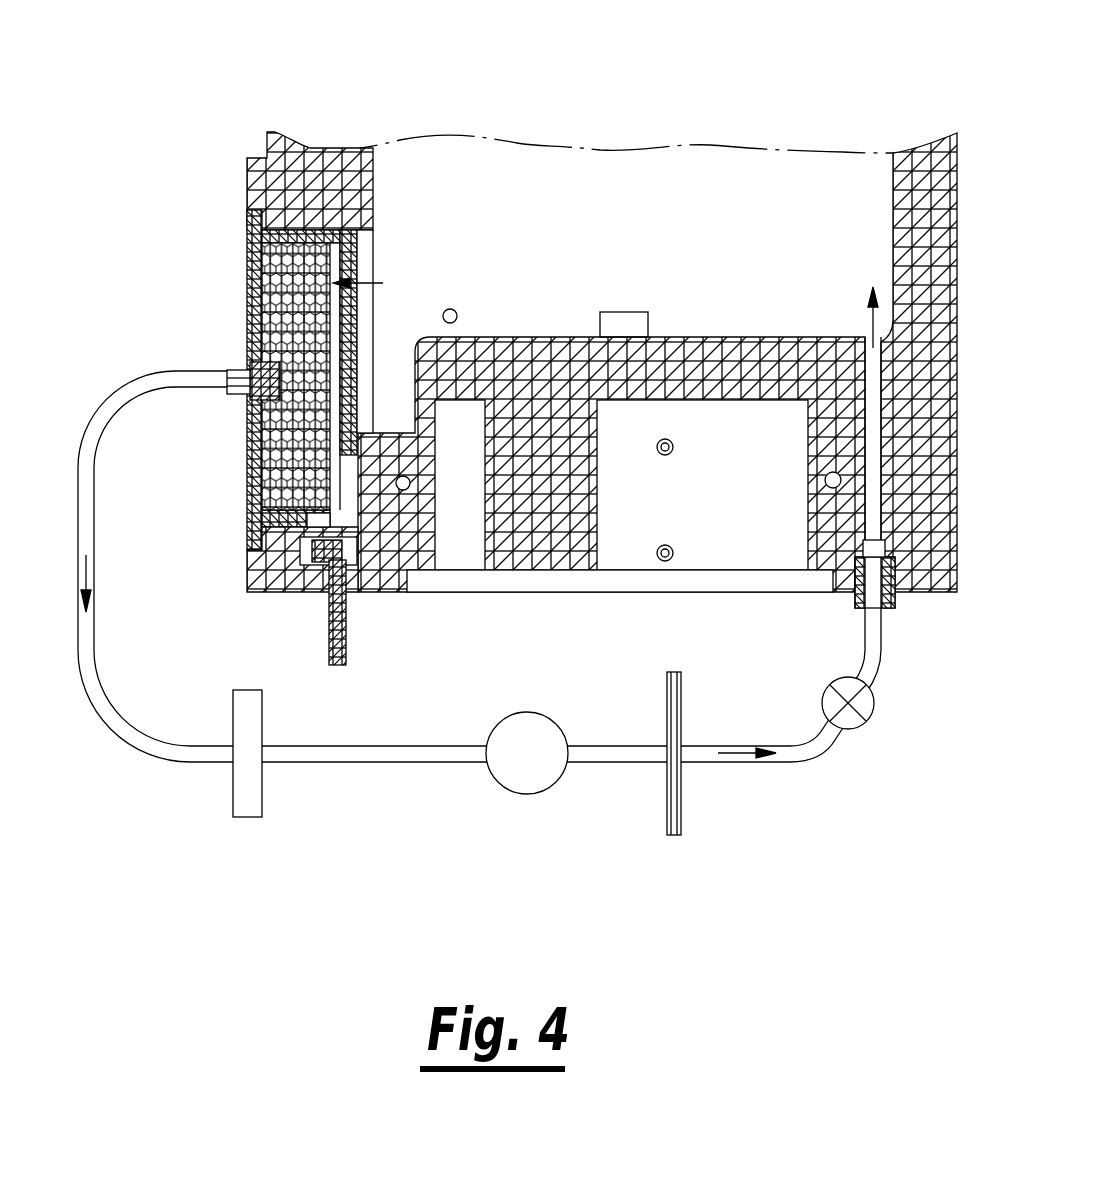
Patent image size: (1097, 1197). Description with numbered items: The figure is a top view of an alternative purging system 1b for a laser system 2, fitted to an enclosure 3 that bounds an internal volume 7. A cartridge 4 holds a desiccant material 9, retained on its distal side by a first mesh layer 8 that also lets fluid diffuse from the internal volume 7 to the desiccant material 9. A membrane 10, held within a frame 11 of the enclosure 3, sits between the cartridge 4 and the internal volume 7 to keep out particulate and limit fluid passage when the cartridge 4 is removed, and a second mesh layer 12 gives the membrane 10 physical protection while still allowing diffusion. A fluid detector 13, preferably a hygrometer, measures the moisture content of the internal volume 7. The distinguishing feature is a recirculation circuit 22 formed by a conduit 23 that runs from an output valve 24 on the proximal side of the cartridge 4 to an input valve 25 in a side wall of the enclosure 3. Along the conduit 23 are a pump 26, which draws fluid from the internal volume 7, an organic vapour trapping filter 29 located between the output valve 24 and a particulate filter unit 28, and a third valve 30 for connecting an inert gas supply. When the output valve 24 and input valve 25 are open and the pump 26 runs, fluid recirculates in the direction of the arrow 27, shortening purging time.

The purging system 1b is at (112, 354).
The laser system 2 is at (898, 87).
The enclosure 3 is at (293, 150).
The cartridge 4 is at (247, 222).
The internal volume 7 is at (596, 190).
The first mesh layer 8 is at (335, 322).
The desiccant material 9 is at (283, 268).
The membrane 10 is at (373, 240).
The frame 11 is at (350, 512).
The second mesh layer 12 is at (353, 323).
The fluid detector 13 is at (637, 320).
The recirculation circuit 22 is at (140, 790).
The conduit 23 is at (365, 765).
The output valve 24 is at (236, 372).
The input valve 25 is at (892, 605).
The pump 26 is at (527, 753).
The arrow 27 is at (352, 252).
The filter unit 28 is at (682, 822).
The organic vapour trapping filter 29 is at (258, 730).
The third valve 30 is at (875, 718).